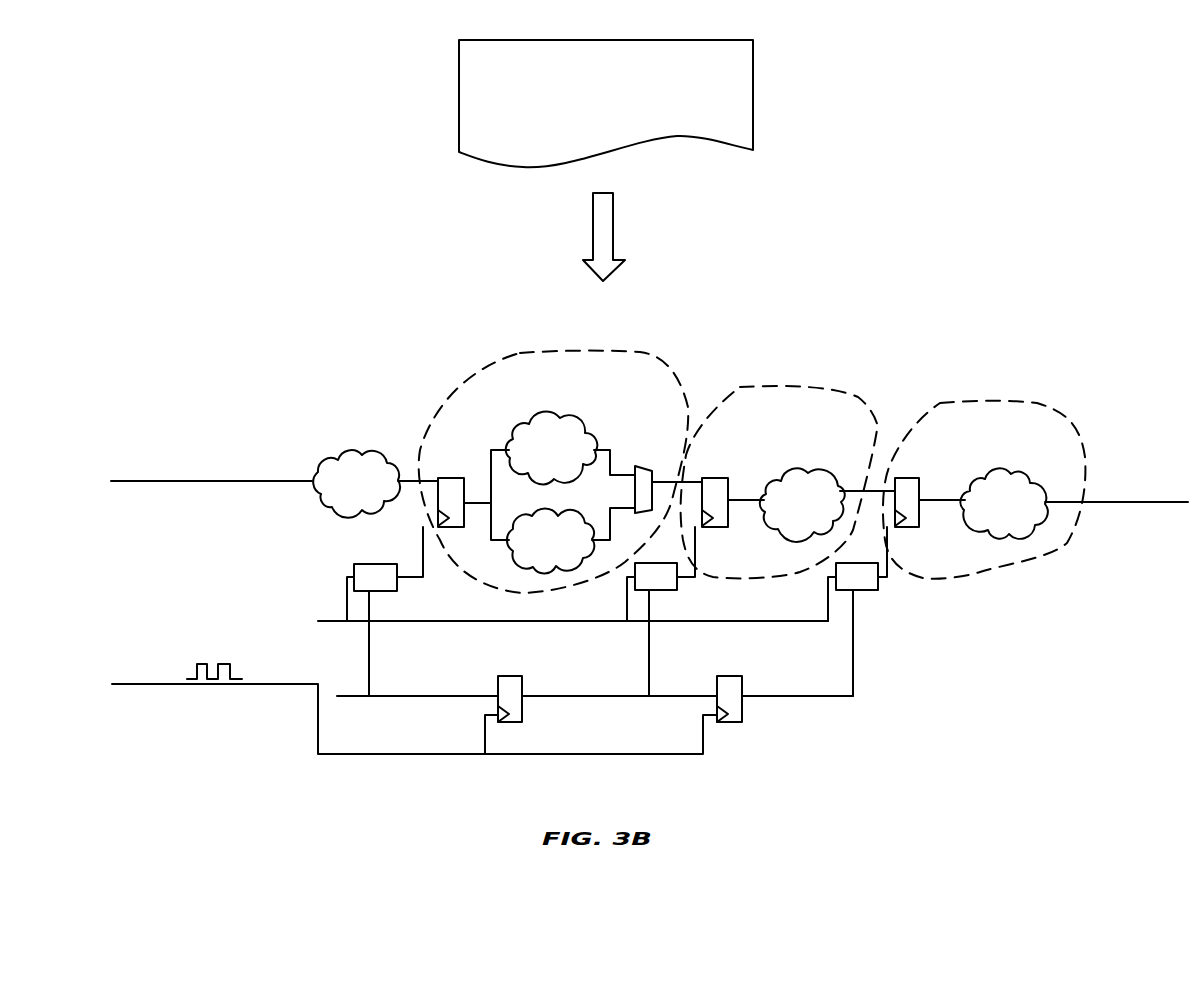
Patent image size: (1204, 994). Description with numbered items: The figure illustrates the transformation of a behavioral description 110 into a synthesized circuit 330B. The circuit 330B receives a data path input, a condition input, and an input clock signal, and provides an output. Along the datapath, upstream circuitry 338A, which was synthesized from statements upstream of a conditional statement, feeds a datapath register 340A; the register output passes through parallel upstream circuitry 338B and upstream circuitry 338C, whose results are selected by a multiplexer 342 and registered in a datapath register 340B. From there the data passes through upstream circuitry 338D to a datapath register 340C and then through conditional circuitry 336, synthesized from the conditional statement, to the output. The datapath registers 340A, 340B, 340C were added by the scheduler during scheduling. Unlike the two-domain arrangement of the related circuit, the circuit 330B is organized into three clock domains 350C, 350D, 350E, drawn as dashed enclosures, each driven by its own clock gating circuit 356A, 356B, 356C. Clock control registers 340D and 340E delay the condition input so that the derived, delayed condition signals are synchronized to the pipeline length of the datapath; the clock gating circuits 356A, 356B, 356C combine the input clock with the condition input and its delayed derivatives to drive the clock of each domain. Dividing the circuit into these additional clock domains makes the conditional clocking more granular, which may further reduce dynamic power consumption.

The behavioral description 110 is at (459, 115).
The circuit 330B is at (1078, 355).
The conditional circuitry 336 is at (1000, 472).
The upstream circuitry 338A is at (373, 456).
The upstream circuitry 338B is at (572, 418).
The upstream circuitry 338C is at (550, 569).
The upstream circuitry 338D is at (800, 473).
The datapath register 340A is at (445, 478).
The datapath register 340B is at (712, 478).
The datapath register 340C is at (906, 478).
The clock control register 340D is at (517, 676).
The clock control register 340E is at (737, 676).
The multiplexer 342 is at (636, 496).
The clock domain 350C is at (640, 352).
The clock domain 350D is at (840, 388).
The clock domain 350E is at (978, 403).
The clock gating circuit 356A is at (370, 564).
The clock gating circuit 356B is at (677, 590).
The clock gating circuit 356C is at (878, 590).